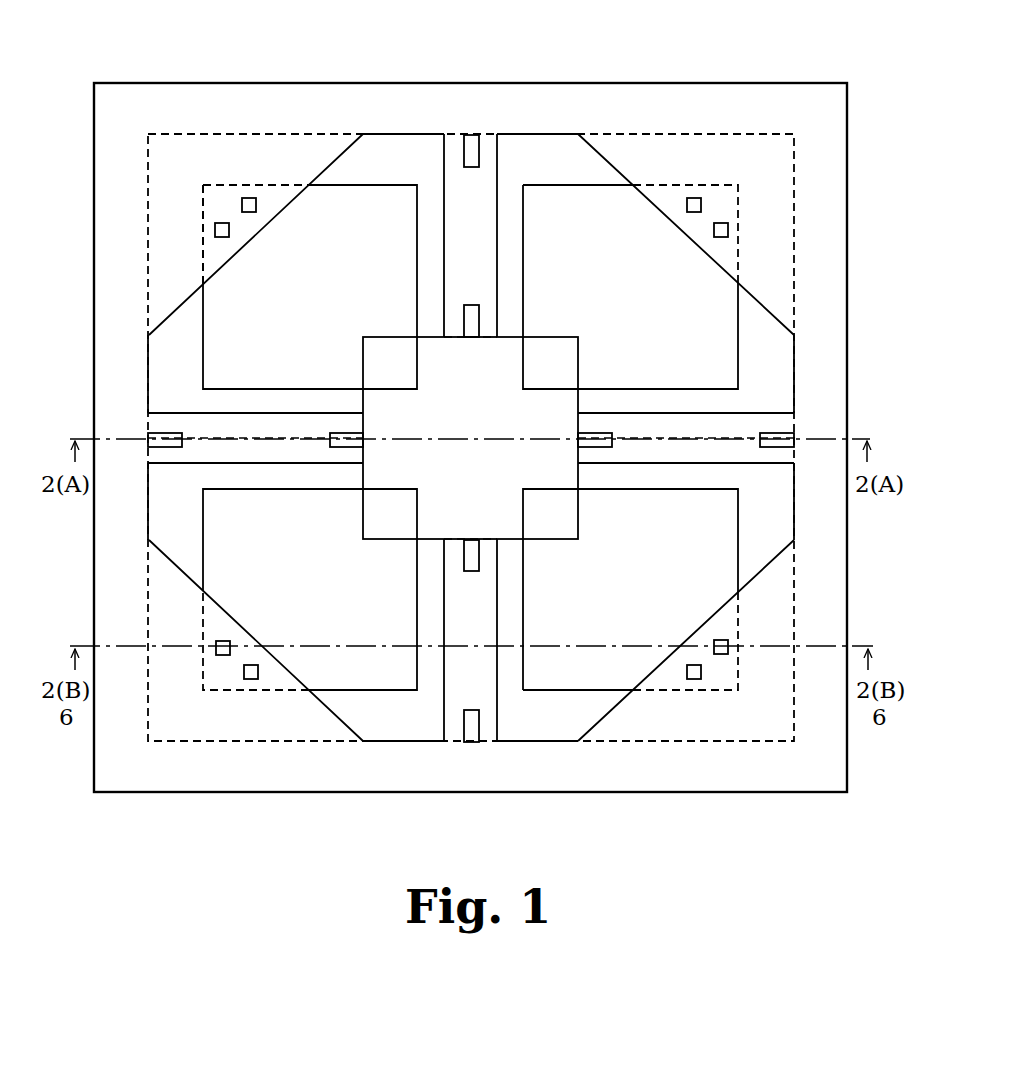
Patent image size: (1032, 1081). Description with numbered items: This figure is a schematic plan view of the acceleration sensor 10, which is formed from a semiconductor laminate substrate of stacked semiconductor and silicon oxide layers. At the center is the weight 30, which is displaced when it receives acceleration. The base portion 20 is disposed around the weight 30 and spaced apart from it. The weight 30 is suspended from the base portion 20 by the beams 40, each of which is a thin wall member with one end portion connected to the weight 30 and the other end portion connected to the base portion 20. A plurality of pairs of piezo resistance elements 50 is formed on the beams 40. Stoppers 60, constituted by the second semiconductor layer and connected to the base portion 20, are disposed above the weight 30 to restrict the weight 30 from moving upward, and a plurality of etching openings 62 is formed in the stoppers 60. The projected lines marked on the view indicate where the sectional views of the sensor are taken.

The acceleration sensor 10 is at (866, 62).
The base portion 20 is at (228, 108).
The weight 30 is at (363, 210).
The beams 40 is at (490, 160).
The piezo resistance elements 50 is at (767, 435).
The stoppers 60 is at (173, 183).
The etching openings 62 is at (215, 229).